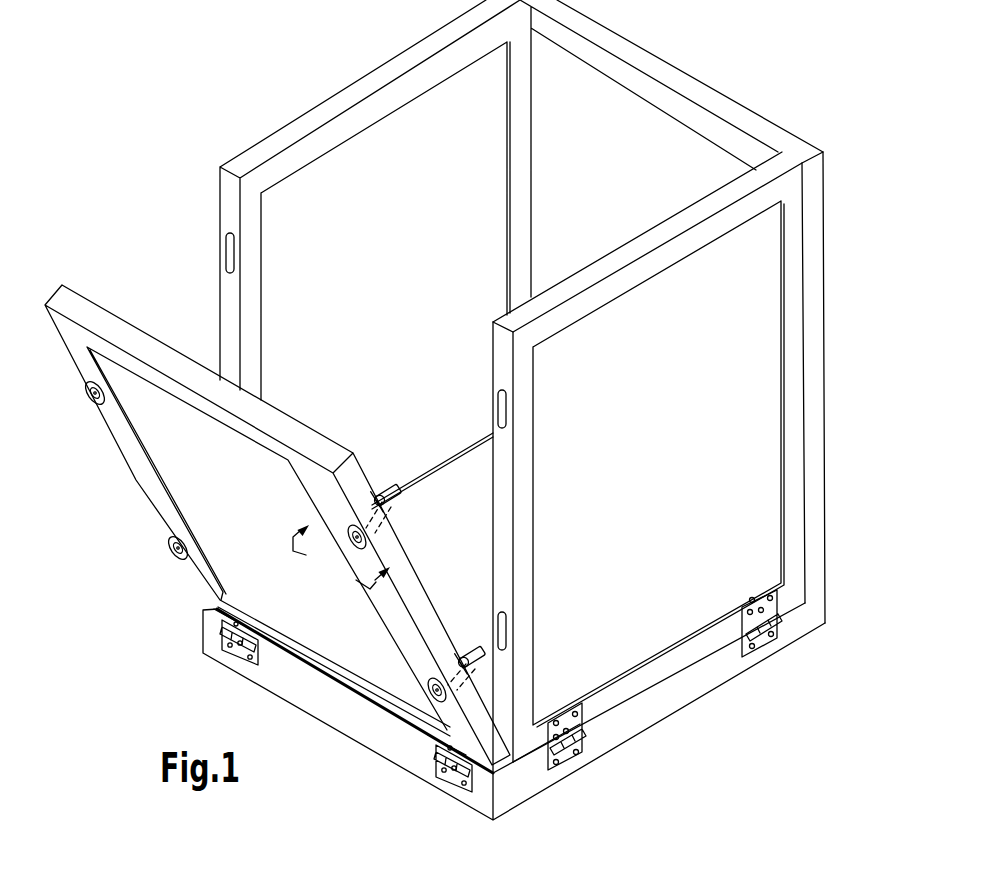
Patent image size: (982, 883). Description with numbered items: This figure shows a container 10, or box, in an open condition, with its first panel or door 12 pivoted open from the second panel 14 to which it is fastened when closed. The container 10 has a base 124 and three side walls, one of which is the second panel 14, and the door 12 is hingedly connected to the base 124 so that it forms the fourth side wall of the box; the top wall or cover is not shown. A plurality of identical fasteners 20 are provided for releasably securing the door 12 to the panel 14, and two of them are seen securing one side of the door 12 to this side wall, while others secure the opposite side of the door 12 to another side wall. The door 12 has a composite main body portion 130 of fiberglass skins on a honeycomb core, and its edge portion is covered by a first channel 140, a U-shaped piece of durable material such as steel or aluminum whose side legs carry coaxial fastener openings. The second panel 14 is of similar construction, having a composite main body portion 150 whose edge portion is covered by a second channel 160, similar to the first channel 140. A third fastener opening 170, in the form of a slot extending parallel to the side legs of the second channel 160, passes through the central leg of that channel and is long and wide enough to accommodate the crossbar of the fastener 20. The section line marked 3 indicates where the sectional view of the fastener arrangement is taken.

The container 10 is at (284, 74).
The door 12 is at (48, 346).
The second panel 14 is at (693, 462).
The fastener 20 is at (95, 401).
The base 124 is at (348, 736).
The main body portion 130 is at (245, 572).
The first channel 140 is at (277, 525).
The main body portion 150 is at (803, 511).
The second channel 160 is at (550, 515).
The third fastener opening 170 is at (226, 253).
The section line 3- 3 is at (349, 542).